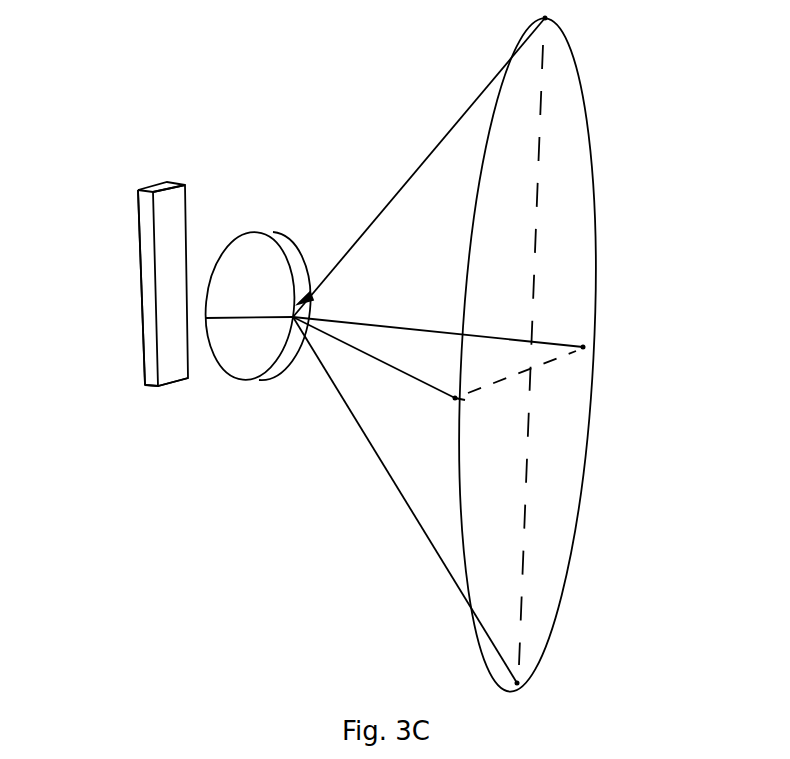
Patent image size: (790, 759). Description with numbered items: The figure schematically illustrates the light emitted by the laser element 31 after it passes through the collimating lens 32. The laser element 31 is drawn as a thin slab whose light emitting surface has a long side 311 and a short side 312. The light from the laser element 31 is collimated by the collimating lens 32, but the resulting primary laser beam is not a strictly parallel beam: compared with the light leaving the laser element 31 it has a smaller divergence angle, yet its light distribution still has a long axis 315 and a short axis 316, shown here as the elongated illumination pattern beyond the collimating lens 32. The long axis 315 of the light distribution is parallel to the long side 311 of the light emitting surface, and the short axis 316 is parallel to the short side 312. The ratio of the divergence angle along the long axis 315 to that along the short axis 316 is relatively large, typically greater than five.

The laser element 31 is at (157, 182).
The long side of the light emitting surface 311 is at (155, 293).
The short side of the light emitting surface 312 is at (172, 377).
The collimating lens 32 is at (280, 245).
The long axis 315 is at (522, 605).
The short axis 316 is at (567, 360).